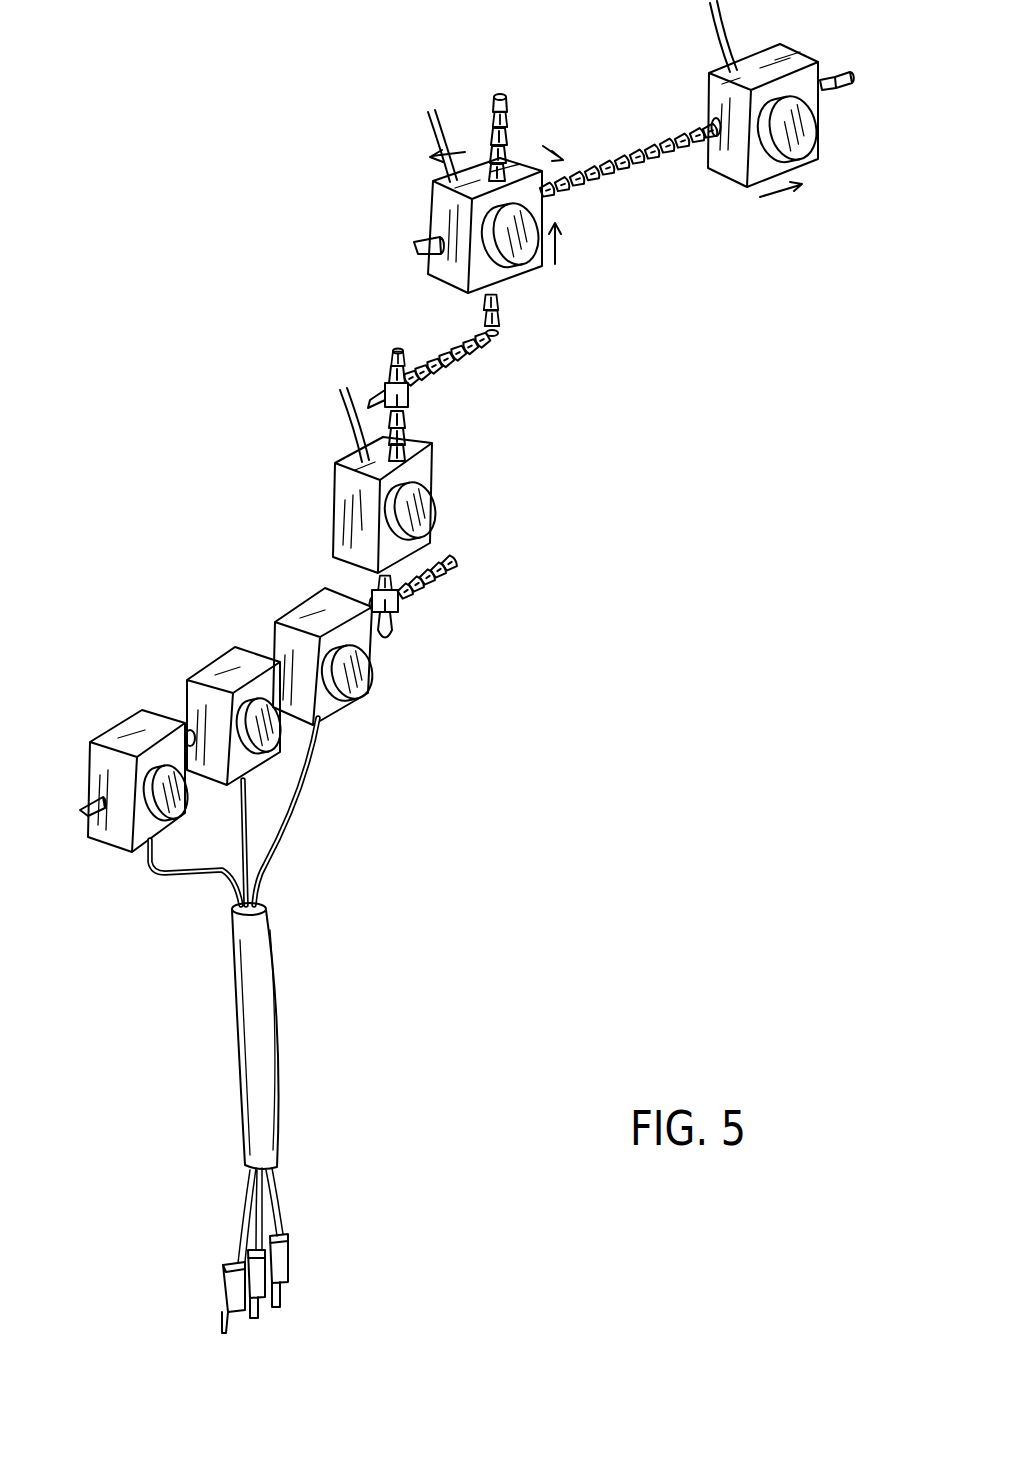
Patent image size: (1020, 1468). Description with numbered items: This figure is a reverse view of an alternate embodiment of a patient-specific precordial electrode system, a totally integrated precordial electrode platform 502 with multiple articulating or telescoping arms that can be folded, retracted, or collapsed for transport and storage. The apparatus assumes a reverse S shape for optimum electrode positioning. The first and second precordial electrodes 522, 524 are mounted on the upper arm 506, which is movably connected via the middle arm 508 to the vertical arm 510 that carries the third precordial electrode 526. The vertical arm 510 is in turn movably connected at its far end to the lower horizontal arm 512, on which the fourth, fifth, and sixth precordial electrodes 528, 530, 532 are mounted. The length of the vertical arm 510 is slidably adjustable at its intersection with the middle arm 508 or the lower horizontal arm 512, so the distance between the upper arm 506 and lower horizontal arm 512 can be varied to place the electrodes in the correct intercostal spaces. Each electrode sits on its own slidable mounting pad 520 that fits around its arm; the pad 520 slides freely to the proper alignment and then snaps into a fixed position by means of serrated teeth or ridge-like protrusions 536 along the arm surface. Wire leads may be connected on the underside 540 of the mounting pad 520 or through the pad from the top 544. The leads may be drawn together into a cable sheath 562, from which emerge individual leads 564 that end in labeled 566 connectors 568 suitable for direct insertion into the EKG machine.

The totally integrated precordial electrode platform 502 is at (655, 745).
The upper arm 506 is at (637, 170).
The middle arm 508 is at (475, 335).
The vertical arm 510 is at (375, 573).
The lower horizontal arm 512 is at (398, 605).
The slidable mounting pad 520 is at (725, 172).
The electrode V1 522 is at (806, 130).
The electrode V2 524 is at (514, 254).
The electrode V3 526 is at (428, 518).
The electrode V4 528 is at (362, 673).
The electrode V5 530 is at (262, 750).
The electrode V6 532 is at (180, 798).
The serrated teeth or ridge-like protrusions 536 is at (845, 72).
The underside of the mounting pad 540 is at (722, 20).
The top of the mounting pad 544 is at (347, 398).
The cable sheath 562 is at (268, 1028).
The individual leads 564 is at (242, 1198).
The label 566 is at (288, 1268).
The connectors 568 is at (281, 1293).